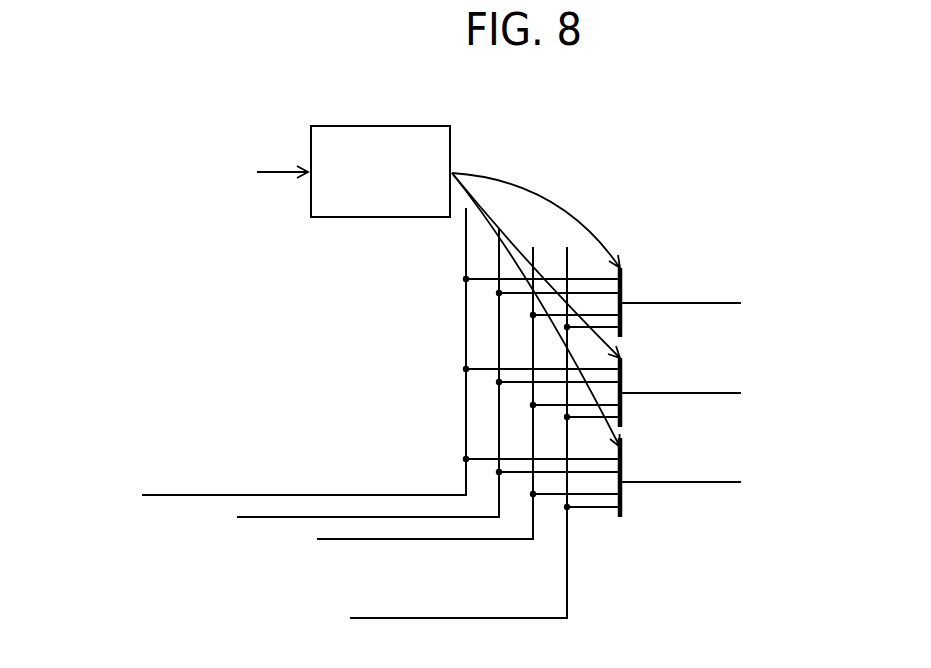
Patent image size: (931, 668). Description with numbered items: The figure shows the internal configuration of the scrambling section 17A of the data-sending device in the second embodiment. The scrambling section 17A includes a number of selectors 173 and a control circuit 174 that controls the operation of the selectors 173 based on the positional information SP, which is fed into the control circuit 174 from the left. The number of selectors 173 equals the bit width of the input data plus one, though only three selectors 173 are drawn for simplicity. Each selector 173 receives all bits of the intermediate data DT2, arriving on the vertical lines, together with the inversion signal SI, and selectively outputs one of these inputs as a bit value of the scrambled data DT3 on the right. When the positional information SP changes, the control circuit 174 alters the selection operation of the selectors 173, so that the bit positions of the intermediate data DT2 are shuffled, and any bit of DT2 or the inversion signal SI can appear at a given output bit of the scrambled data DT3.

The scrambling section 17A is at (222, 57).
The control circuit 174 is at (372, 126).
The selectors 173 is at (664, 237).